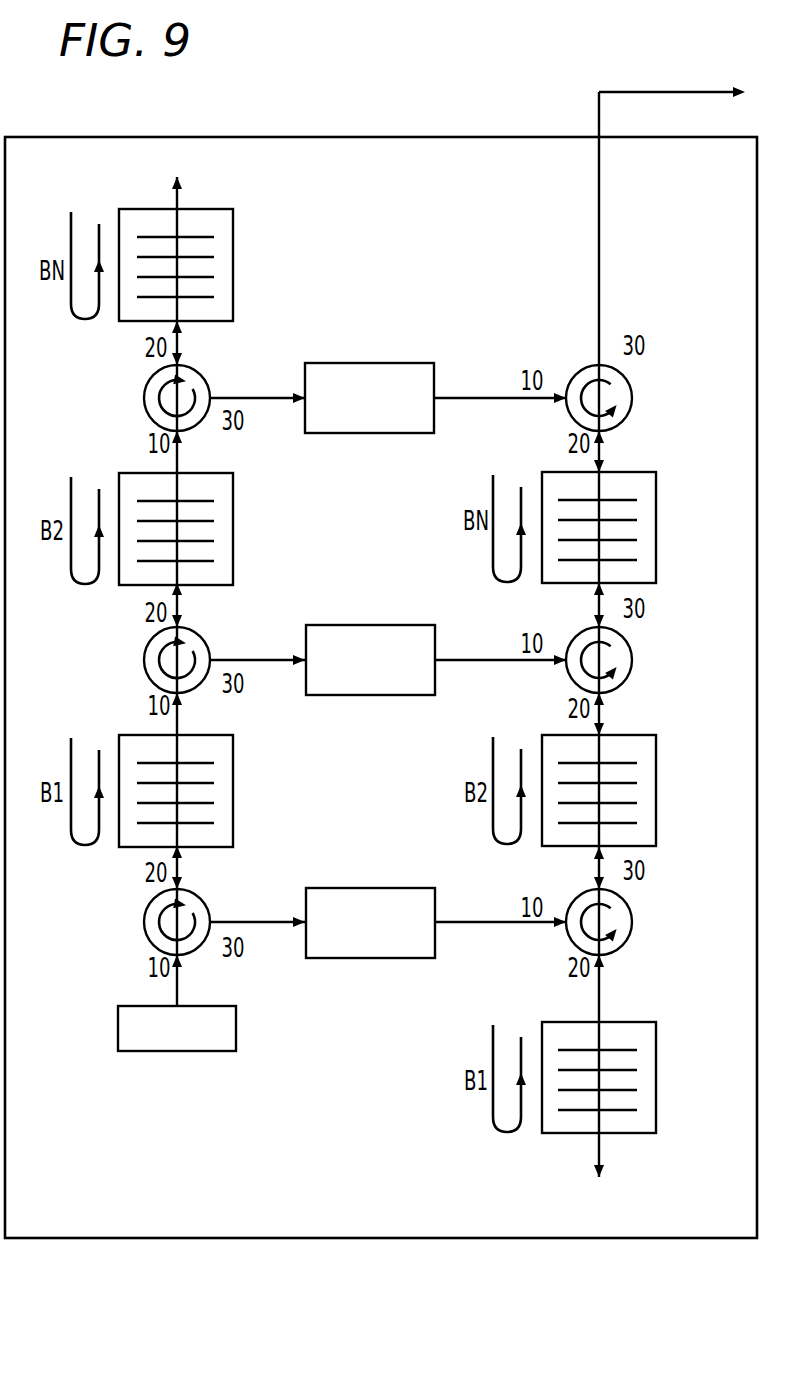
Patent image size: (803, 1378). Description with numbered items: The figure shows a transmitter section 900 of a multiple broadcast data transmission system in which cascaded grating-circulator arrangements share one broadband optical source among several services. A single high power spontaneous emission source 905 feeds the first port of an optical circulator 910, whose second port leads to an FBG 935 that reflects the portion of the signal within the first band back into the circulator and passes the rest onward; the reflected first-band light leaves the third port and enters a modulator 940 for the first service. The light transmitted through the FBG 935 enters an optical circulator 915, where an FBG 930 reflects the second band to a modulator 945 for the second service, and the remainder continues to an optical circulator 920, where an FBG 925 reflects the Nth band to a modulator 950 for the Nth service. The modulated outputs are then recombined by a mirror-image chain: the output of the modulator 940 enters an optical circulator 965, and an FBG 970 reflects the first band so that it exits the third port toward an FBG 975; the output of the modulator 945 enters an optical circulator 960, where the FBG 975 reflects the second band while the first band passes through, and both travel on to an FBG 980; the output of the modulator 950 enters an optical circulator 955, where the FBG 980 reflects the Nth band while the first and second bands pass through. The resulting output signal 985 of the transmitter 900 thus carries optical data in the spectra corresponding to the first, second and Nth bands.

The transmitter section 900 is at (296, 1238).
The spontaneous emission source 905 is at (178, 1051).
The optical circulator 910 is at (142, 921).
The optical circulator 915 is at (142, 659).
The optical circulator 920 is at (142, 397).
The FBG 925 is at (236, 252).
The FBG 930 is at (236, 520).
The FBG 935 is at (236, 774).
The modulator 940 is at (372, 888).
The modulator 945 is at (372, 625).
The modulator 950 is at (372, 363).
The optical circulator 955 is at (632, 398).
The optical circulator 960 is at (632, 660).
The optical circulator 965 is at (632, 922).
The FBG 970 is at (658, 1072).
The FBG 975 is at (658, 790).
The FBG 980 is at (658, 522).
The output signal 985 is at (638, 92).